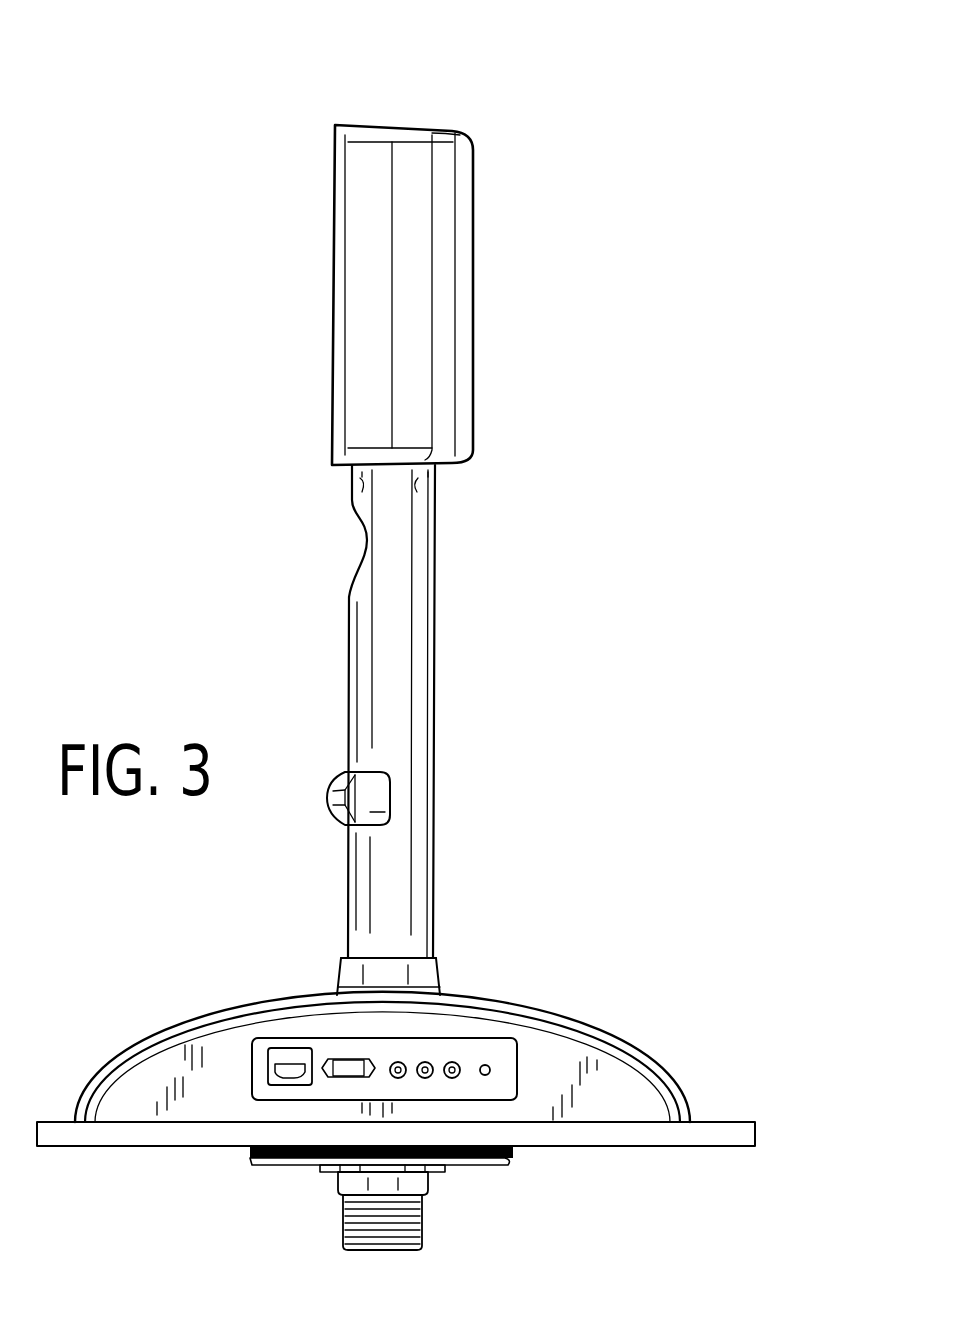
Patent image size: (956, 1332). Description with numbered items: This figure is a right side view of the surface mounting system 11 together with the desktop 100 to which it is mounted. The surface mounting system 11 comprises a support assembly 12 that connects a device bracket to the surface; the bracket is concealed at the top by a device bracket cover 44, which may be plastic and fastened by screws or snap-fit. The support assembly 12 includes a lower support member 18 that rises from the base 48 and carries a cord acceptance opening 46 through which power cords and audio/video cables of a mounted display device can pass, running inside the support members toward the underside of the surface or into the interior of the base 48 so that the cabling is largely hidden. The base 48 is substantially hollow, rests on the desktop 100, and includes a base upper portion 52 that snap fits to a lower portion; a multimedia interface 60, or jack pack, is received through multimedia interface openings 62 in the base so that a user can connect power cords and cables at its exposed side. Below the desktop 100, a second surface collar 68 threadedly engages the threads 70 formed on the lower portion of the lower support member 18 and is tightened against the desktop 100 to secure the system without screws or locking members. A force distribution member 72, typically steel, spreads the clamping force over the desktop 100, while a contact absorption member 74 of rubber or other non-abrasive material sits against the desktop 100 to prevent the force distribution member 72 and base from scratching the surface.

The surface mounting system 11 is at (449, 48).
The device bracket cover 44 is at (452, 313).
The cord acceptance opening 46 is at (366, 548).
The lower support member 18 is at (358, 660).
The support assembly 12 is at (427, 677).
The multimedia interface 60 is at (318, 1040).
The multimedia interface opening 62 is at (270, 1058).
The base 48 is at (592, 1025).
The base upper portion 52 is at (610, 1050).
The desktop 100 is at (147, 1150).
The force distribution member 72 is at (290, 1165).
The contact absorption member 74 is at (527, 1156).
The second surface collar 68 is at (435, 1178).
The threads 70 is at (343, 1210).